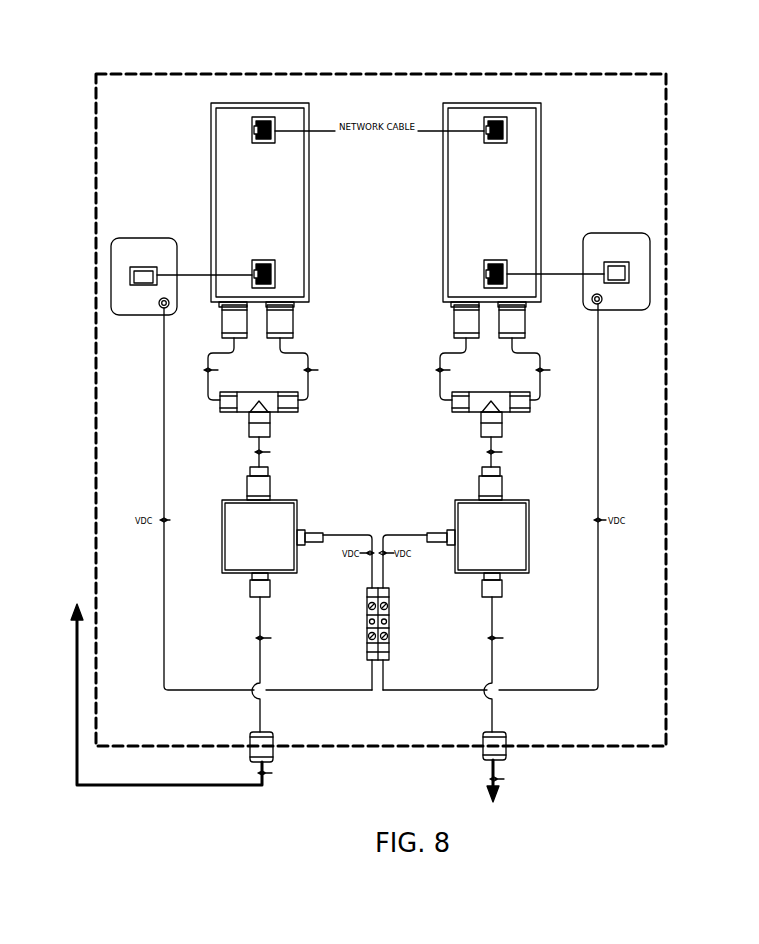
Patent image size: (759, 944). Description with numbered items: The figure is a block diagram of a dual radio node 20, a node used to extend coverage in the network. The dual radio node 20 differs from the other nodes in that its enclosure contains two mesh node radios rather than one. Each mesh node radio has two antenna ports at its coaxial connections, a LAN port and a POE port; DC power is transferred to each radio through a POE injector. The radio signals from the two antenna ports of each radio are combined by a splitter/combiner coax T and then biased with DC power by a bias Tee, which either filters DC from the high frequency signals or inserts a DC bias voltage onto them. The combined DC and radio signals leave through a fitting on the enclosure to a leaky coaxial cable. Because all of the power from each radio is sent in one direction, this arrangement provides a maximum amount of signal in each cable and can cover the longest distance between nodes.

The dual radio node 20 is at (684, 109).